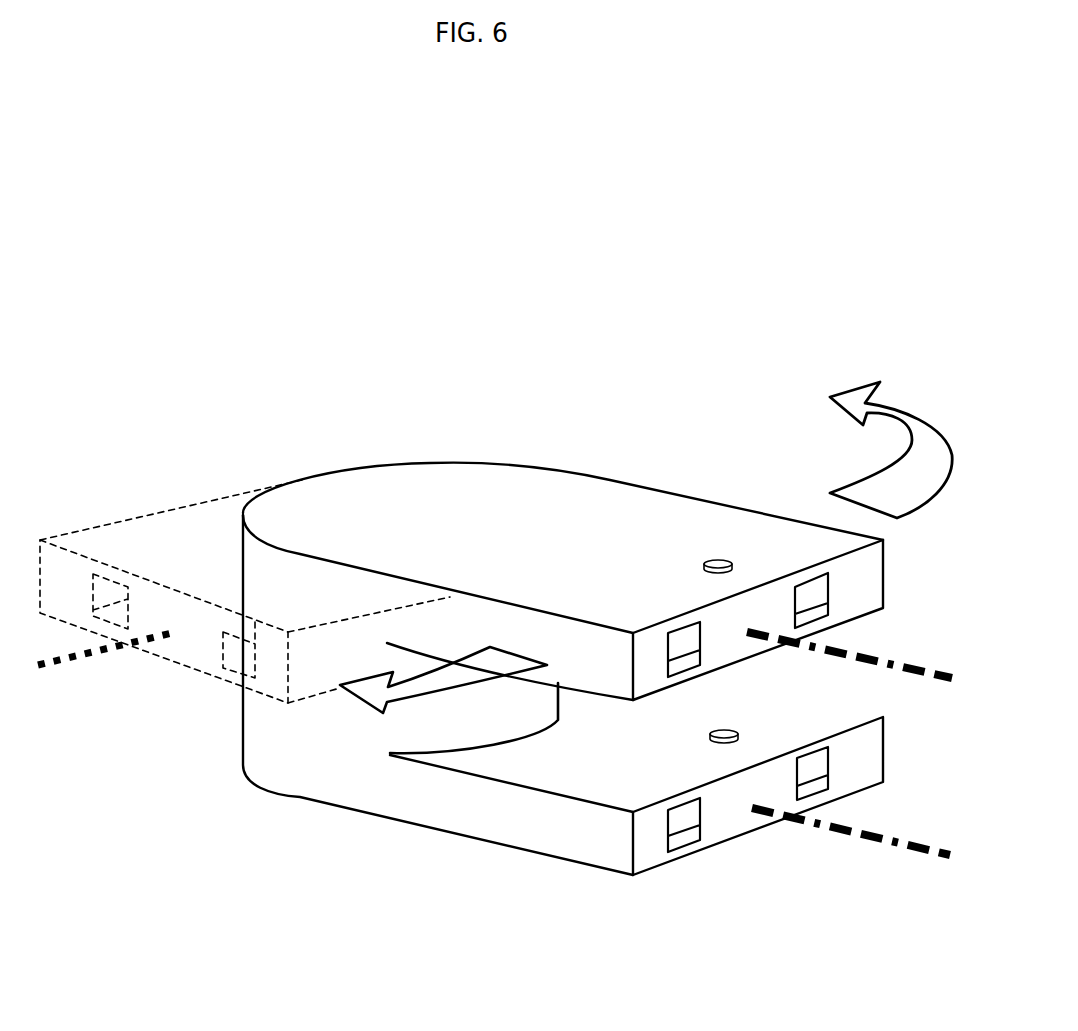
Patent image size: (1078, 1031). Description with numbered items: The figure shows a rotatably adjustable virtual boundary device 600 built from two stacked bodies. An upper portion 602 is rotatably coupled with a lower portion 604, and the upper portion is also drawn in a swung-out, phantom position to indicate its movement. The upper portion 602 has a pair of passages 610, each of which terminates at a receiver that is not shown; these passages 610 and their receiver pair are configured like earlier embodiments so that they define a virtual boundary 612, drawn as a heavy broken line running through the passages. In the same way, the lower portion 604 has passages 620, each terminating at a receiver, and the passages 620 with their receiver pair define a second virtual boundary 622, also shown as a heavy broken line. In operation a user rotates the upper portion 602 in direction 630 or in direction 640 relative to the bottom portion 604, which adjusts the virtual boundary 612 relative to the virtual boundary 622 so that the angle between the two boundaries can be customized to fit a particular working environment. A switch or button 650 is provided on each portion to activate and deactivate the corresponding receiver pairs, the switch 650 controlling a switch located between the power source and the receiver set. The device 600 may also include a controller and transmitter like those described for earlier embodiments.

The virtual boundary device 600 is at (364, 427).
The upper portion 602 is at (558, 466).
The lower portion 604 is at (457, 832).
The passages 610 is at (808, 593).
The virtual boundary 612 is at (917, 662).
The passages 620 is at (804, 796).
The virtual boundary 622 is at (922, 850).
The direction 630 is at (484, 690).
The direction 640 is at (912, 447).
The switch or button 650 is at (712, 560).